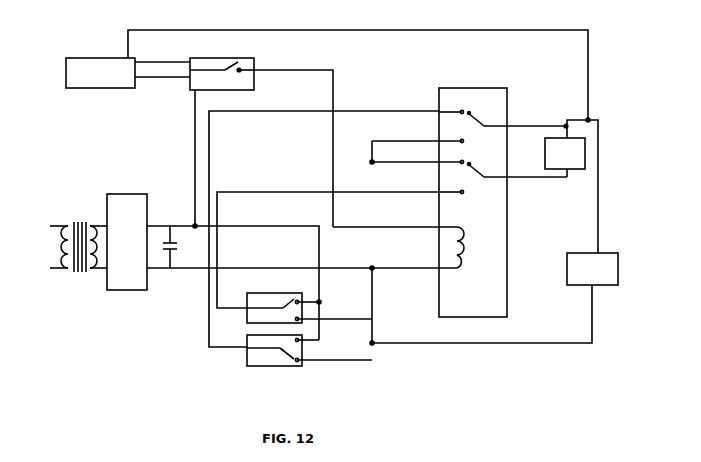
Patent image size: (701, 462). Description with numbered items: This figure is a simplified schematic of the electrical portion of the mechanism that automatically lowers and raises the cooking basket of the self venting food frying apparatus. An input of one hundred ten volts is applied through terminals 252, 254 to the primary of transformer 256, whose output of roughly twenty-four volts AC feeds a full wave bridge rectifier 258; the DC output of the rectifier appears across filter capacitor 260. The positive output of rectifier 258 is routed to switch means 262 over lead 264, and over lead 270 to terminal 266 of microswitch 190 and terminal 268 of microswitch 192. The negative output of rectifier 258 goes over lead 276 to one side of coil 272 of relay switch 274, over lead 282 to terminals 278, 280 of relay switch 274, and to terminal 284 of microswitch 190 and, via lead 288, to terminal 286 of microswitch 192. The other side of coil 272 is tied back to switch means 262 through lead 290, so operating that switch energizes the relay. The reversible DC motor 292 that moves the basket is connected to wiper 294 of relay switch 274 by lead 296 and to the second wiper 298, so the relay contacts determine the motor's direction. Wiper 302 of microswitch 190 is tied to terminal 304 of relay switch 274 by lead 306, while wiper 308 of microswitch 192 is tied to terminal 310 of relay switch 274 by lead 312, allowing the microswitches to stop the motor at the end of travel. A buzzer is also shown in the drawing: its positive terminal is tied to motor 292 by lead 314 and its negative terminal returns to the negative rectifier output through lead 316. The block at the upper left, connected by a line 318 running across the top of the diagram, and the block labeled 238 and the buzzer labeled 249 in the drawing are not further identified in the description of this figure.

The microswitch 190 is at (261, 300).
The microswitch 192 is at (245, 358).
The control circuit 238 is at (100, 73).
The battery 249 is at (592, 267).
The terminal 252 is at (40, 215).
The terminal 254 is at (39, 280).
The transformer 256 is at (84, 238).
The full wave bridge rectifier 258 is at (125, 233).
The filter capacitor 260 is at (165, 259).
The switch means 262 is at (222, 65).
The lead 264 is at (170, 159).
The terminal 266 is at (324, 295).
The terminal 268 is at (324, 341).
The lead 270 is at (233, 283).
The coil 272 is at (475, 247).
The relay switch 274 is at (473, 212).
The lead 276 is at (302, 276).
The terminal 278 is at (436, 152).
The terminal 280 is at (436, 172).
The lead 282 is at (395, 217).
The terminal 284 is at (334, 311).
The terminal 286 is at (334, 369).
The lead 288 is at (389, 305).
The lead 290 is at (293, 139).
The reversible DC motor 292 is at (565, 153).
The wiper 294 is at (468, 110).
The lead 296 is at (526, 119).
The wiper 298 is at (484, 172).
The wiper 302 is at (272, 309).
The terminal 304 is at (460, 200).
The lead 306 is at (328, 242).
The wiper 308 is at (272, 352).
The terminal 310 is at (425, 121).
The lead 312 is at (324, 229).
The lead 314 is at (598, 186).
The lead 316 is at (481, 325).
The line 318 is at (375, 76).